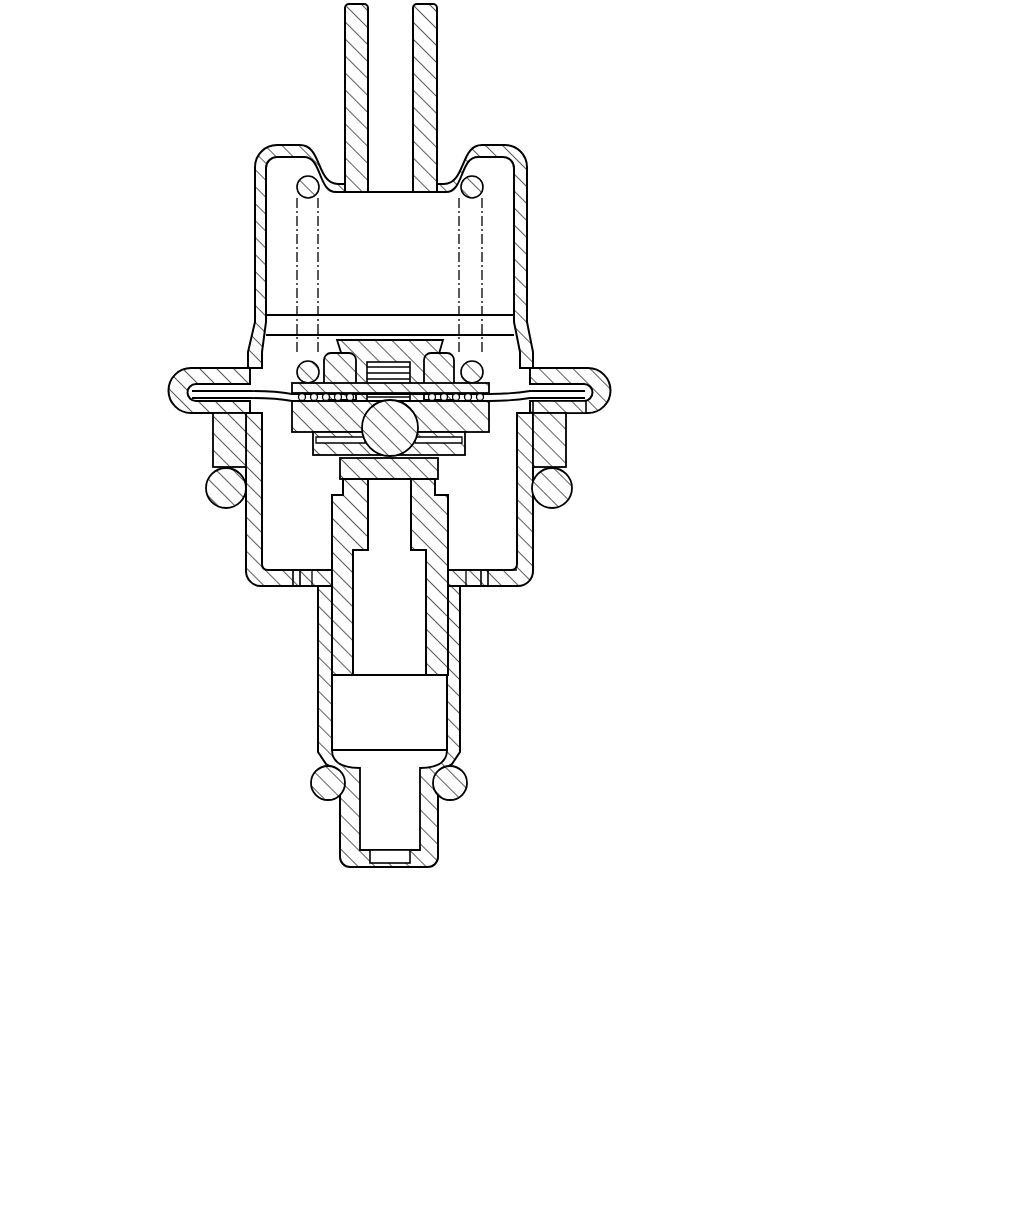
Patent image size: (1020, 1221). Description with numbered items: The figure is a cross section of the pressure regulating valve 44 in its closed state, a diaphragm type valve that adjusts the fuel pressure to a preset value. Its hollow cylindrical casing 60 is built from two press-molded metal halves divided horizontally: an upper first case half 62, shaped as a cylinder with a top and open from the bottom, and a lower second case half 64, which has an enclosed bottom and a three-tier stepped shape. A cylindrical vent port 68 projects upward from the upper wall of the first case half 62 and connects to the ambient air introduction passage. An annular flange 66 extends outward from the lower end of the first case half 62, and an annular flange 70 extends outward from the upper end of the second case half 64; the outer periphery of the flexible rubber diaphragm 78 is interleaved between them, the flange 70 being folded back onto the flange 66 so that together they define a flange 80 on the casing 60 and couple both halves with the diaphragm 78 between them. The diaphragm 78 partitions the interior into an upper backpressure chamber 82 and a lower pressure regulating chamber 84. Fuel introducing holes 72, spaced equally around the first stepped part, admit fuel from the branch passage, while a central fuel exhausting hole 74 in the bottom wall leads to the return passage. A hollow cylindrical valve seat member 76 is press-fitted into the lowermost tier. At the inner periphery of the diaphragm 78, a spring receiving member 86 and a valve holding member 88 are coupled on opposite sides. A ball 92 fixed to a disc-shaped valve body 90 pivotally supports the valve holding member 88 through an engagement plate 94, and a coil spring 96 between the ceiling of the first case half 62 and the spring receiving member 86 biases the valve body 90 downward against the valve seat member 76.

The pressure regulating valve 44 is at (660, 188).
The casing 60 is at (537, 252).
The first case half 62 is at (252, 194).
The second case half 64 is at (248, 587).
The annular flange 66 is at (612, 380).
The vent port 68 is at (422, 57).
The annular flange 70 is at (582, 407).
The fuel introducing holes 72 is at (297, 590).
The fuel exhausting hole 74 is at (405, 868).
The valve seat member 76 is at (515, 588).
The diaphragm 78 is at (272, 397).
The flange 80 is at (185, 372).
The backpressure chamber 82 is at (498, 183).
The pressure regulating chamber 84 is at (448, 545).
The spring receiving member 86 is at (333, 370).
The valve holding member 88 is at (213, 447).
The valve body 90 is at (343, 467).
The ball 92 is at (488, 528).
The engagement plate 94 is at (340, 450).
The spring 96 is at (312, 180).